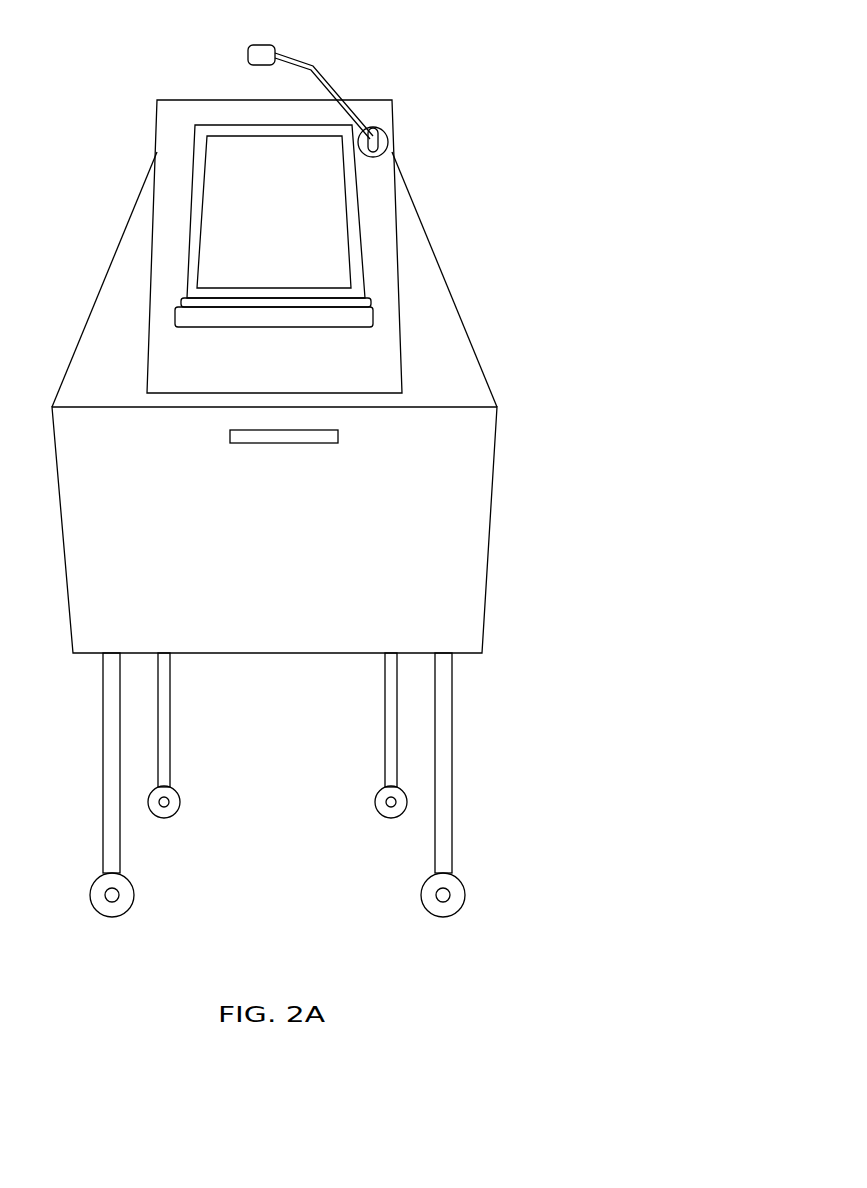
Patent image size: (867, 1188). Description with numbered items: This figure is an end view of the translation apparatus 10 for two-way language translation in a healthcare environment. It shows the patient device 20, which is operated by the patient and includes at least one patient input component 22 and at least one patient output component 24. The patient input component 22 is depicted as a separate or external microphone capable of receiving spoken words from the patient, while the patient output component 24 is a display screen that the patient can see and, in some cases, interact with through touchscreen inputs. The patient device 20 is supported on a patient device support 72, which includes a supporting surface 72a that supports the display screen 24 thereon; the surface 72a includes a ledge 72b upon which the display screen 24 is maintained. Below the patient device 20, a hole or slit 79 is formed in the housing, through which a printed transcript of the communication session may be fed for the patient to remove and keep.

The apparatus 10 is at (234, 38).
The patient device 20 is at (366, 68).
The patient input component 22 is at (383, 137).
The patient output component 24 is at (253, 230).
The patient device support 72 is at (395, 202).
The supporting surface 72a is at (375, 265).
The ledge 72b is at (318, 320).
The hole or slit 79 is at (283, 445).